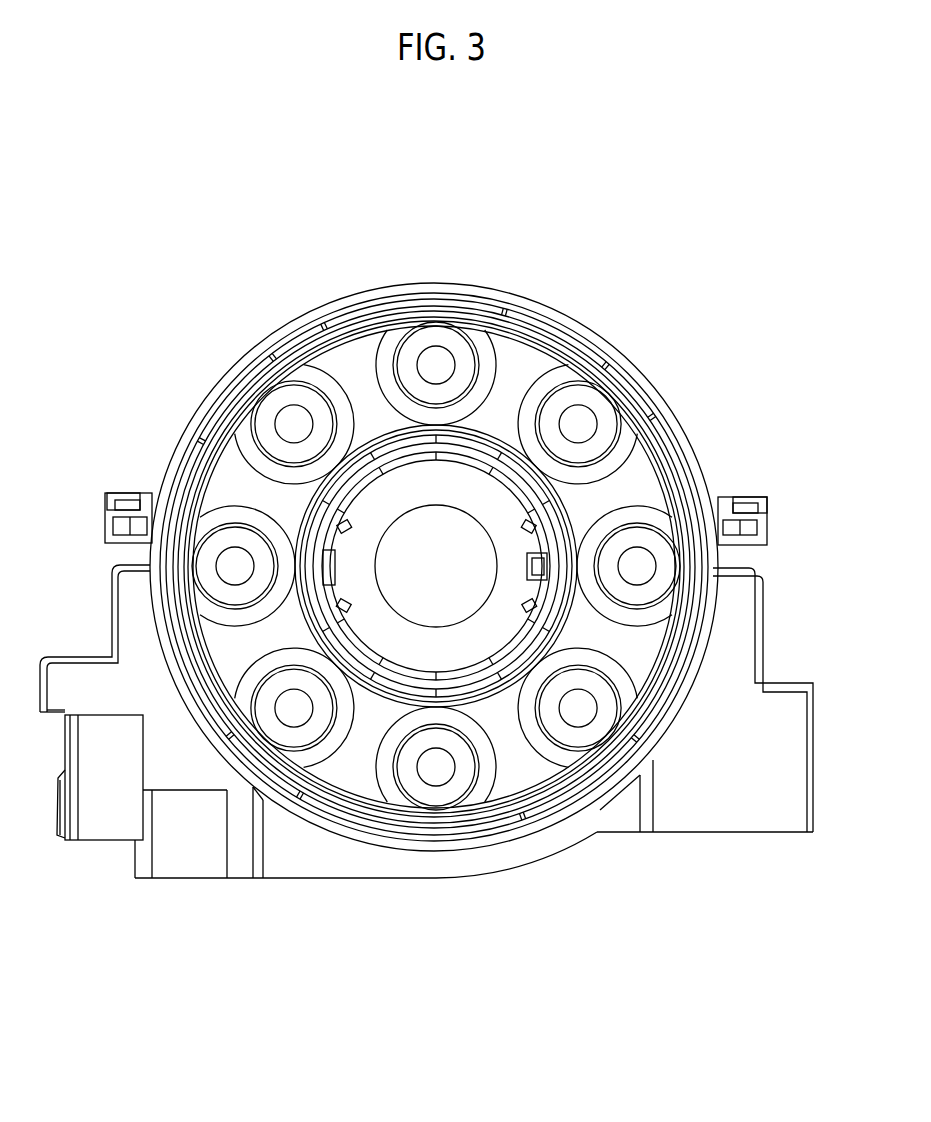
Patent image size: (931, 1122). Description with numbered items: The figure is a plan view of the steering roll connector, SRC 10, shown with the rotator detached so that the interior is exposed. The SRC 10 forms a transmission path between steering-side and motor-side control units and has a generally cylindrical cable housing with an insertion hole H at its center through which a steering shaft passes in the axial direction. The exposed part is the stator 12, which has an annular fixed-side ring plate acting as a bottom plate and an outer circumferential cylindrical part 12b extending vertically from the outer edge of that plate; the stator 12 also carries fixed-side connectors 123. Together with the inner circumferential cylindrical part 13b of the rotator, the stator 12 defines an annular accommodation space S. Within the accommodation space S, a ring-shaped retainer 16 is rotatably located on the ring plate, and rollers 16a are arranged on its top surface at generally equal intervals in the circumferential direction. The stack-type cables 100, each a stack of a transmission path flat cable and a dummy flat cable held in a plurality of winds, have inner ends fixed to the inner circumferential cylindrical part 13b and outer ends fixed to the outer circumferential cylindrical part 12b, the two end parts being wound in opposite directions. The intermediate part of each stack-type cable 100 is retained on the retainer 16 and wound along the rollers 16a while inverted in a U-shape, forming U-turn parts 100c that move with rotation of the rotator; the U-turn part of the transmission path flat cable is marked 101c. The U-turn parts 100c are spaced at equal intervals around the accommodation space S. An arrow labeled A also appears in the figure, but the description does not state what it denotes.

The steering roll connector (SRC) 10 is at (156, 237).
The stator 12 is at (337, 289).
The outer circumferential cylindrical part 12b is at (432, 290).
The retainer 16 is at (537, 375).
The rollers 16a is at (392, 352).
The stack-type cable 100 is at (620, 410).
The U-turn part 100c is at (436, 566).
The U-turn part of transmission path FC 101c is at (478, 368).
The inner circumferential cylindrical part 13b is at (575, 540).
The fixed-side connector 123 is at (60, 808).
The accommodation space S is at (612, 496).
The insertion hole H is at (447, 578).
The section line A is at (205, 348).